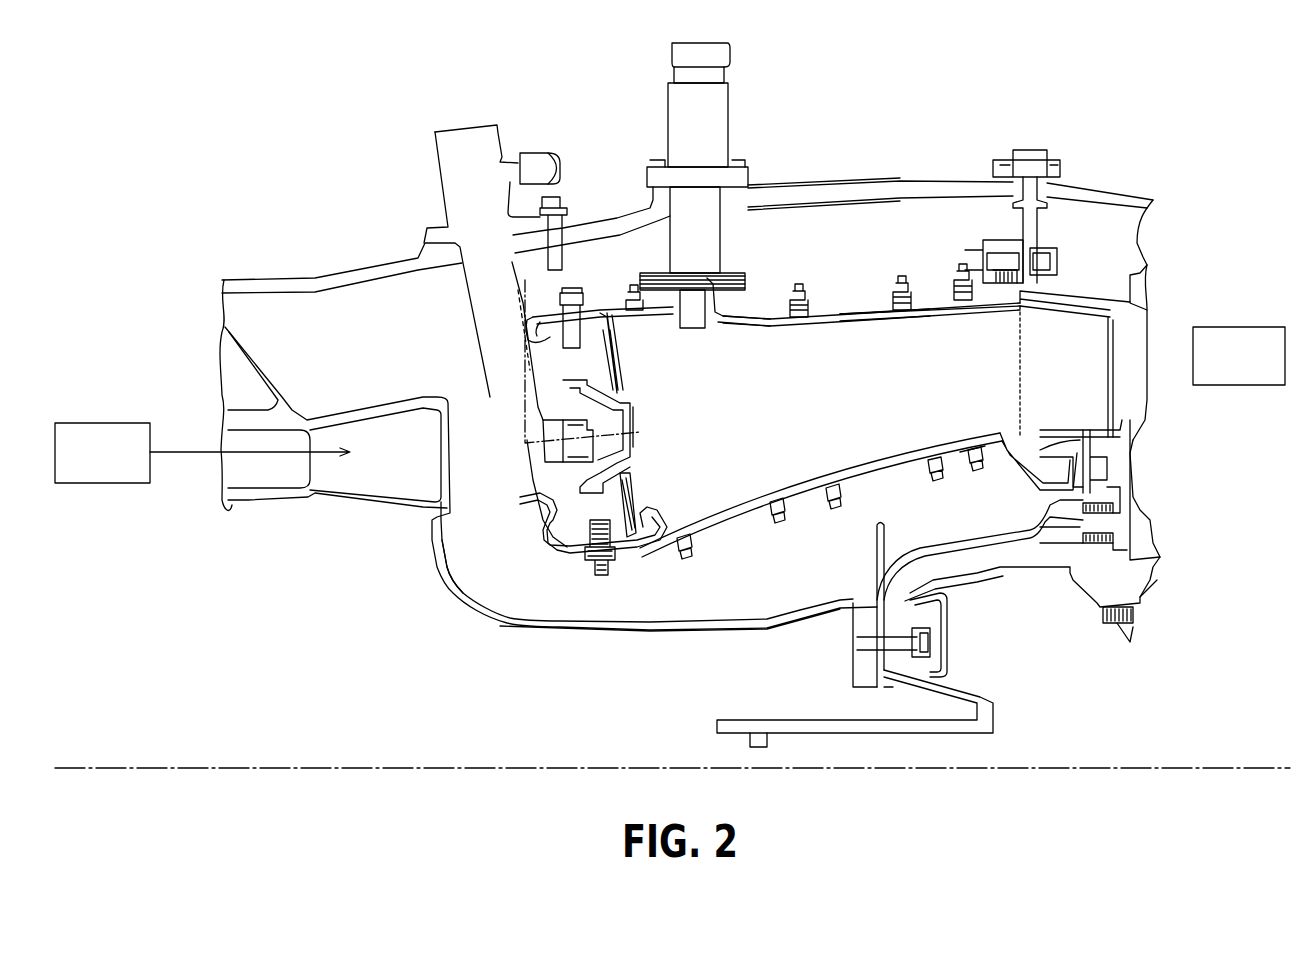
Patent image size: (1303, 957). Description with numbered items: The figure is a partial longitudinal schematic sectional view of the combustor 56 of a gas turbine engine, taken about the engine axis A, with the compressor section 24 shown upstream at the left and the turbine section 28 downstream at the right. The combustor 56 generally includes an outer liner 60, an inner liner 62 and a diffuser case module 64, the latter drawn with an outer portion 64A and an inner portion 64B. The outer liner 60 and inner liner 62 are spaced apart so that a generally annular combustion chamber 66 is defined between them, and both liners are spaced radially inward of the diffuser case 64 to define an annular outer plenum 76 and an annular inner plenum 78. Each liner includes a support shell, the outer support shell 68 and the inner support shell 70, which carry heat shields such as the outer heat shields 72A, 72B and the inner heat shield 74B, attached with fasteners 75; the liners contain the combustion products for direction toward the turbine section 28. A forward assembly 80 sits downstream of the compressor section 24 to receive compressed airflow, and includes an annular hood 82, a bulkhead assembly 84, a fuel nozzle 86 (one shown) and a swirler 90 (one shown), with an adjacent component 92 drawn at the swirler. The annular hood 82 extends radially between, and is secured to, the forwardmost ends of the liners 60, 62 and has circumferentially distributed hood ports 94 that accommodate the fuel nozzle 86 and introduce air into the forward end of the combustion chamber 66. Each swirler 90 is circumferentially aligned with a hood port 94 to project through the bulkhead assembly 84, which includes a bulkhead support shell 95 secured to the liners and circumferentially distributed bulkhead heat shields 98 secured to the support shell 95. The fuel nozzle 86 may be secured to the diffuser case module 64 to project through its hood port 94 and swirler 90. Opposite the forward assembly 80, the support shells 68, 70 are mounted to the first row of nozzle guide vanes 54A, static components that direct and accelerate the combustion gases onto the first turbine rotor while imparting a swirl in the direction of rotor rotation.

The compressor section 24 is at (113, 461).
The turbine section 28 is at (1250, 367).
The combustor 56 is at (976, 148).
The nozzle guide vanes 54A is at (1080, 380).
The outer liner 60 is at (882, 288).
The inner liner 62 is at (813, 510).
The diffuser case module 64 is at (880, 170).
The outer shell forward portion 64A is at (848, 184).
The inner shell 64B is at (645, 631).
The combustion chamber 66 is at (839, 393).
The support shell 68 is at (845, 307).
The support shell 70 is at (890, 472).
The outer heat shield panel 72A is at (735, 322).
The outer heat shield panel 72B is at (887, 318).
The inner heat shield panel 74B is at (745, 500).
The fasteners 75 is at (968, 477).
The annular outer plenum 76 is at (781, 250).
The annular inner plenum 78 is at (740, 598).
The forward assembly 80 is at (542, 571).
The annular hood 82 is at (557, 525).
The bulkhead assembly 84 is at (637, 385).
The fuel nozzle 86 is at (493, 224).
The swirler 90 is at (632, 463).
The swirler assembly 92 is at (620, 418).
The hood ports 94 is at (535, 497).
The bulkhead support shell 95 is at (560, 538).
The bulkhead heat shields 98 is at (637, 498).
The engine central axis A is at (1228, 766).